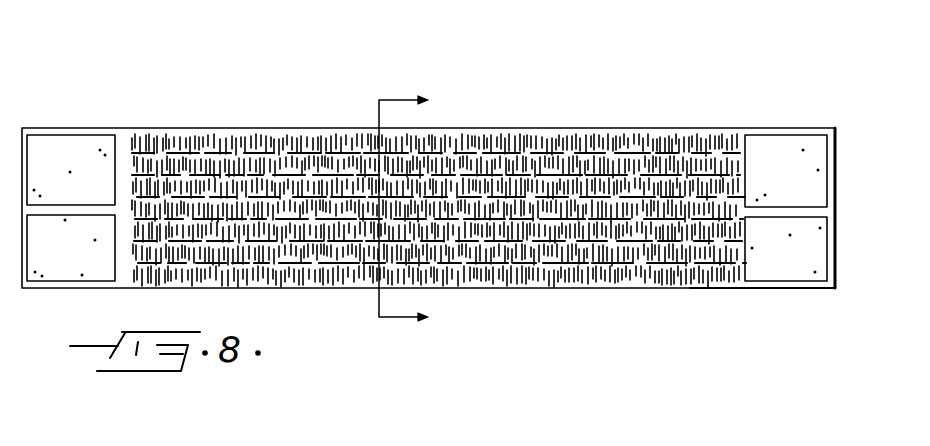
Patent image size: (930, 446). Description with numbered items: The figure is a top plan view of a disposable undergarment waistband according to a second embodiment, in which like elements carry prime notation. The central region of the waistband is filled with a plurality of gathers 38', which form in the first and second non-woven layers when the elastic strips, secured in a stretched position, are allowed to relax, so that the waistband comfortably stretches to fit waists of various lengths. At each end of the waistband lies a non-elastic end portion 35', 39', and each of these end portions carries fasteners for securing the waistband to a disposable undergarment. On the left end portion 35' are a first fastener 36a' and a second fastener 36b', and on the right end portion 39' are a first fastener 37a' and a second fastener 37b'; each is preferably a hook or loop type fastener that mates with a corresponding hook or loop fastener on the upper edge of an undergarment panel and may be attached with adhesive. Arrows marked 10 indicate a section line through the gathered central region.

The non-elastic end portion 35' is at (428, 274).
The first fastener 36a' is at (95, 135).
The second fastener 36b' is at (78, 272).
The first fastener 37a' is at (786, 131).
The second fastener 37b' is at (791, 290).
The gathers 38' is at (439, 160).
The non-elastic end portion 39' is at (762, 325).
The section line 10 is at (404, 212).